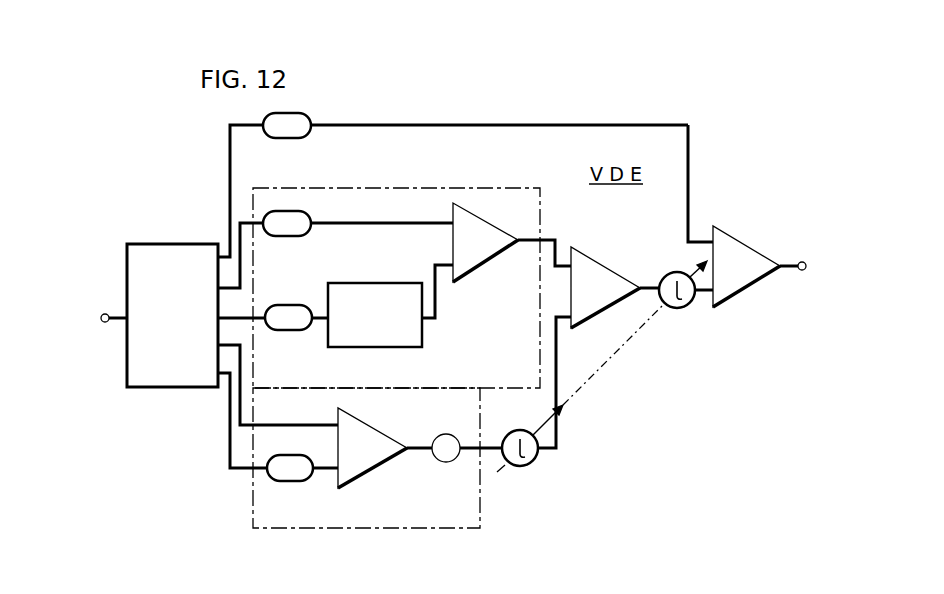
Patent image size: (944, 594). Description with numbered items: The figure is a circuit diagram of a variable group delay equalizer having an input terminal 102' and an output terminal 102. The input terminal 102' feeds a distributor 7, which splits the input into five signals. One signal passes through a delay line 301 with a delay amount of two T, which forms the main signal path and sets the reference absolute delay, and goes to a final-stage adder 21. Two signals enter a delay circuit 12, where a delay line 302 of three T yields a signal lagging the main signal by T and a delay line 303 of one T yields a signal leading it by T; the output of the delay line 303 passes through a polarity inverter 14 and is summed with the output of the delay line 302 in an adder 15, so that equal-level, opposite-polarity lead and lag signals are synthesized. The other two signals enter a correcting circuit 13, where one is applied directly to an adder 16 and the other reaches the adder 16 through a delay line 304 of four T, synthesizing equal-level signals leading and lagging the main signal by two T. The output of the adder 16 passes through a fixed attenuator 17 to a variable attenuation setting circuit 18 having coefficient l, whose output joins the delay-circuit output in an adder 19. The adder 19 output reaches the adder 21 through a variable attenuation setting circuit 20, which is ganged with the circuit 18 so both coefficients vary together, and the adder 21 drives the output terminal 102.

The distributor 7 is at (178, 244).
The input terminal 102' is at (105, 301).
The delay line 301 is at (296, 113).
The delay line 302 is at (296, 211).
The delay line 303 is at (274, 305).
The delay line 304 is at (303, 482).
The delay circuit 12 is at (430, 188).
The correcting circuit 13 is at (480, 517).
The polarity inverter 14 is at (375, 283).
The adder 15 is at (485, 217).
The adder 16 is at (390, 435).
The fixed attenuator 17 is at (446, 434).
The variable attenuation setting circuit 18 is at (537, 465).
The adder 19 is at (598, 262).
The variable attenuation setting circuit 20 is at (687, 310).
The adder 21 is at (740, 236).
The output terminal 102 is at (801, 246).